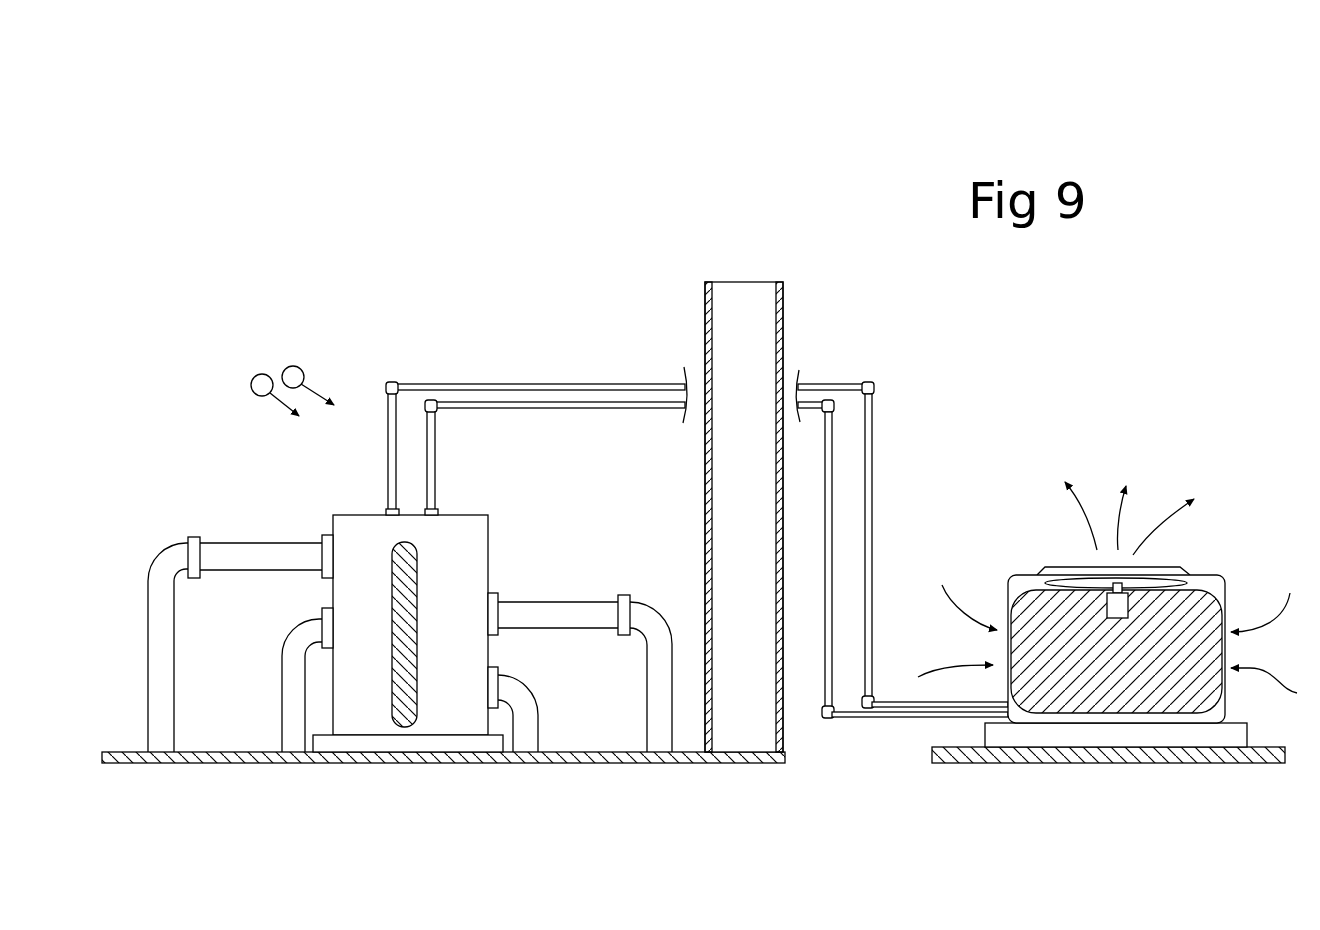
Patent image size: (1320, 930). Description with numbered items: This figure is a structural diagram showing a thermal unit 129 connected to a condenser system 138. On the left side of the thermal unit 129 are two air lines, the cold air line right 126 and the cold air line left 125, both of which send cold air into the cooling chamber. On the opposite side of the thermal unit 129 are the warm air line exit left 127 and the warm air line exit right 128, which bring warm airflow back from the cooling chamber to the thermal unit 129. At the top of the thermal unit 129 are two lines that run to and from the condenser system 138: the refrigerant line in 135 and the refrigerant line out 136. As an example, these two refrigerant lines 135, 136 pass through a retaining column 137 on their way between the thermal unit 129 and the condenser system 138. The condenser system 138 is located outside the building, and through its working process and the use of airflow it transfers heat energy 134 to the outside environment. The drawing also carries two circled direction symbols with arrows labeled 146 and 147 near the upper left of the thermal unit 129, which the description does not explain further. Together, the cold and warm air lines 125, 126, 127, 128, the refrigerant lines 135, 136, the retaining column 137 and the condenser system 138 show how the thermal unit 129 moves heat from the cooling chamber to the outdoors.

The cold air line left 125 is at (282, 687).
The cold air line right 126 is at (217, 543).
The warm air line exit left 127 is at (560, 600).
The warm air line exit right 128 is at (538, 727).
The thermal unit 129 is at (347, 515).
The heat energy 134 is at (1175, 533).
The refrigerant line in 135 is at (485, 385).
The refrigerant line out 136 is at (580, 405).
The retaining column 137 is at (787, 300).
The condenser system 138 is at (1005, 575).
The refrigerant flow direction symbol 146 is at (283, 370).
The liquid flow direction symbol 147 is at (252, 383).